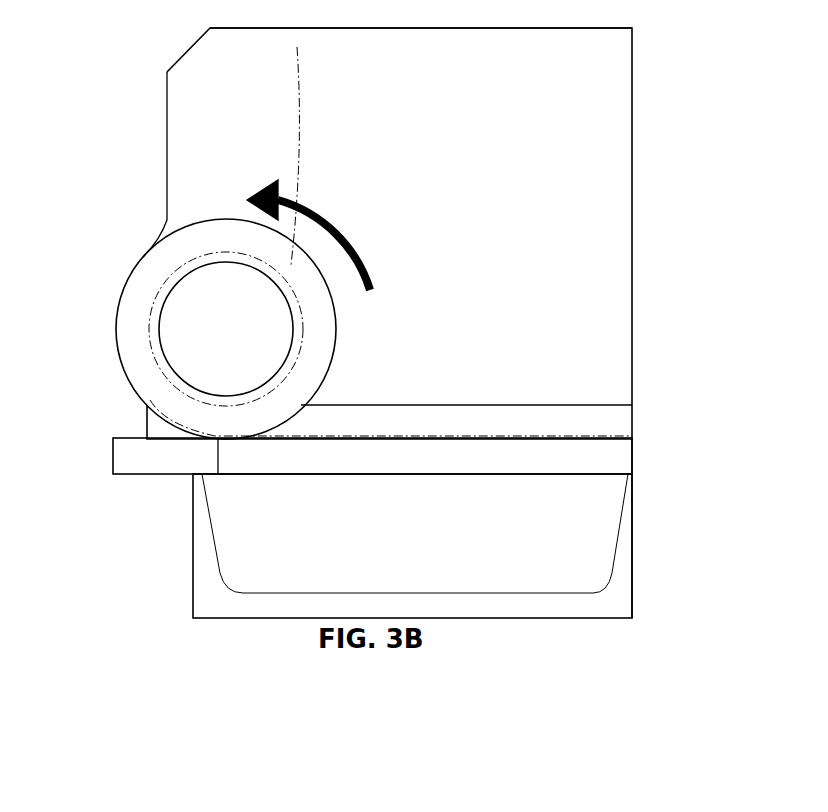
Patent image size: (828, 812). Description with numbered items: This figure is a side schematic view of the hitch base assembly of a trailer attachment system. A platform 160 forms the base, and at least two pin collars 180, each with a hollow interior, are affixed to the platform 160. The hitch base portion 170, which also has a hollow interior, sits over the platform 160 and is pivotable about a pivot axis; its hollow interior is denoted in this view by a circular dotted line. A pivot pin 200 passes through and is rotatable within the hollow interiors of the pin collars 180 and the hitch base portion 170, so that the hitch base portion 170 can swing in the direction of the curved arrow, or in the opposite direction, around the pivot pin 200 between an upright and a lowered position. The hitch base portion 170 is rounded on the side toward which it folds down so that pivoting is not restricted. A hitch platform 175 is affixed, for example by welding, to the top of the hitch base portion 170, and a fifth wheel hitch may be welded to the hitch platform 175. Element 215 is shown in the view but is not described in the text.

The platform 160 is at (538, 437).
The hitch base portion 170 is at (575, 207).
The hitch platform 175 is at (470, 66).
The pin collar 180 is at (296, 145).
The pivot pin 200 is at (220, 333).
The roller core 215 is at (195, 342).